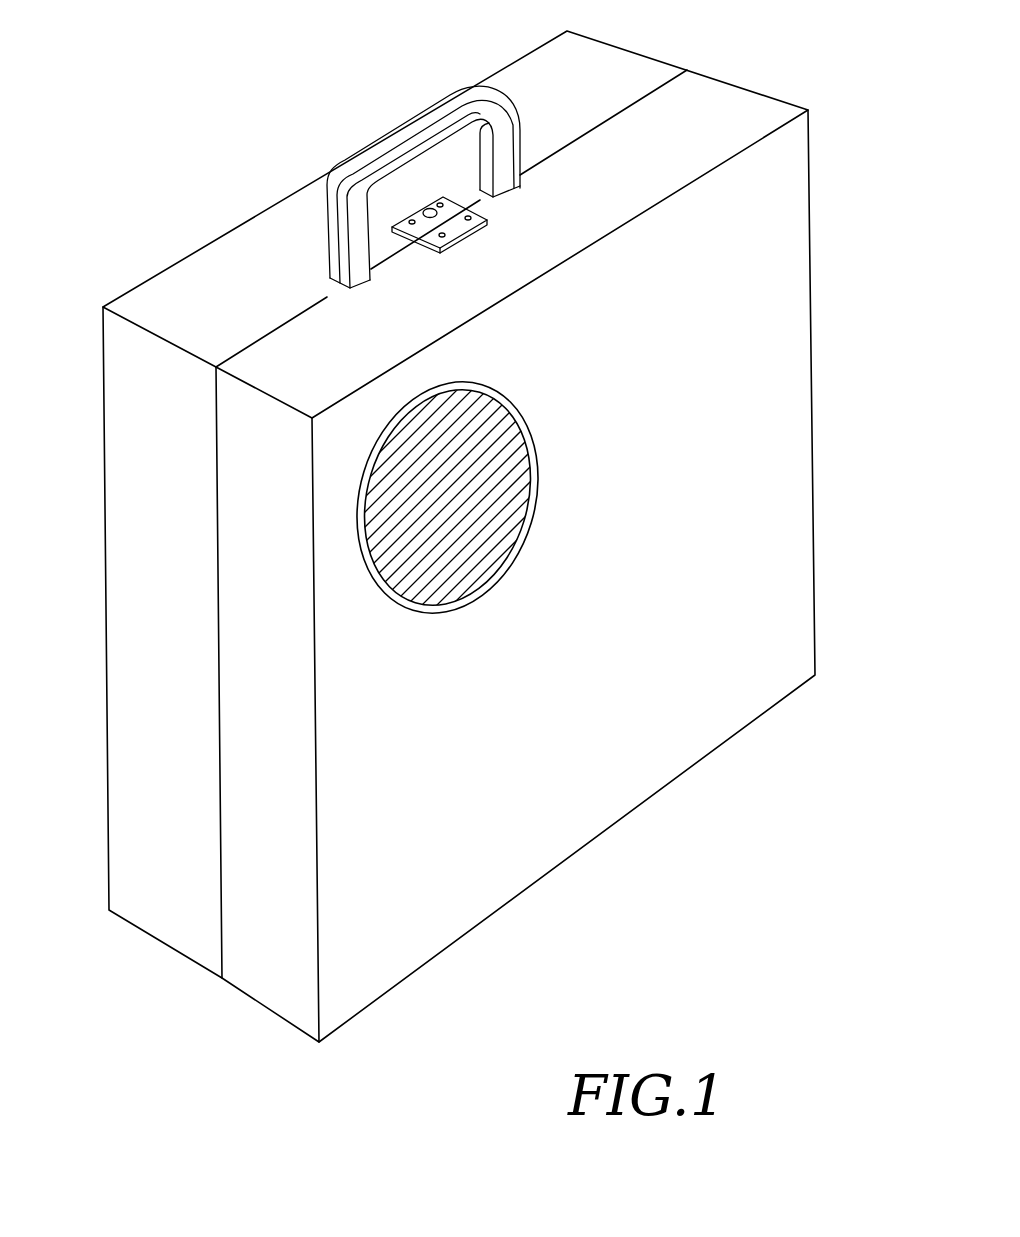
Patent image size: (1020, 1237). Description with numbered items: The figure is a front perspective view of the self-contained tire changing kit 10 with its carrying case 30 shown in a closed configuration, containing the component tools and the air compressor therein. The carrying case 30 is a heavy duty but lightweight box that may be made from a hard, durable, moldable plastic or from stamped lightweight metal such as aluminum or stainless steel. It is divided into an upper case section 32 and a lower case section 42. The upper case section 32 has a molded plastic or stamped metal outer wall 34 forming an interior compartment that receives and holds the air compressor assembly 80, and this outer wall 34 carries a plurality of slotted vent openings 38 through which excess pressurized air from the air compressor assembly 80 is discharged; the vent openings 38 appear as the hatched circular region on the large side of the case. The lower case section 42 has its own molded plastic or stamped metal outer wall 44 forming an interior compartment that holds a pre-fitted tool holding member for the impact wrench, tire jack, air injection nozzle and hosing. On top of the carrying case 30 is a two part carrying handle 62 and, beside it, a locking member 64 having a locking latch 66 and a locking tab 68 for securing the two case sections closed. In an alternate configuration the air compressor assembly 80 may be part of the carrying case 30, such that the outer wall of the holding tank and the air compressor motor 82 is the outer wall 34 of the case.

The self-contained tire changing kit 10 is at (212, 197).
The carrying case 30 is at (714, 108).
The upper case section 32 is at (598, 190).
The outer wall 34 is at (740, 368).
The slotted vent openings 38 is at (490, 425).
The lower case section 42 is at (138, 355).
The outer wall 44 is at (103, 505).
The two part carrying handle 62 is at (412, 150).
The locking member 64 is at (415, 252).
The locking latch 66 is at (453, 228).
The locking tab 68 is at (417, 208).
The air compressor assembly 80 is at (415, 520).
The air compressor motor 82 is at (457, 483).